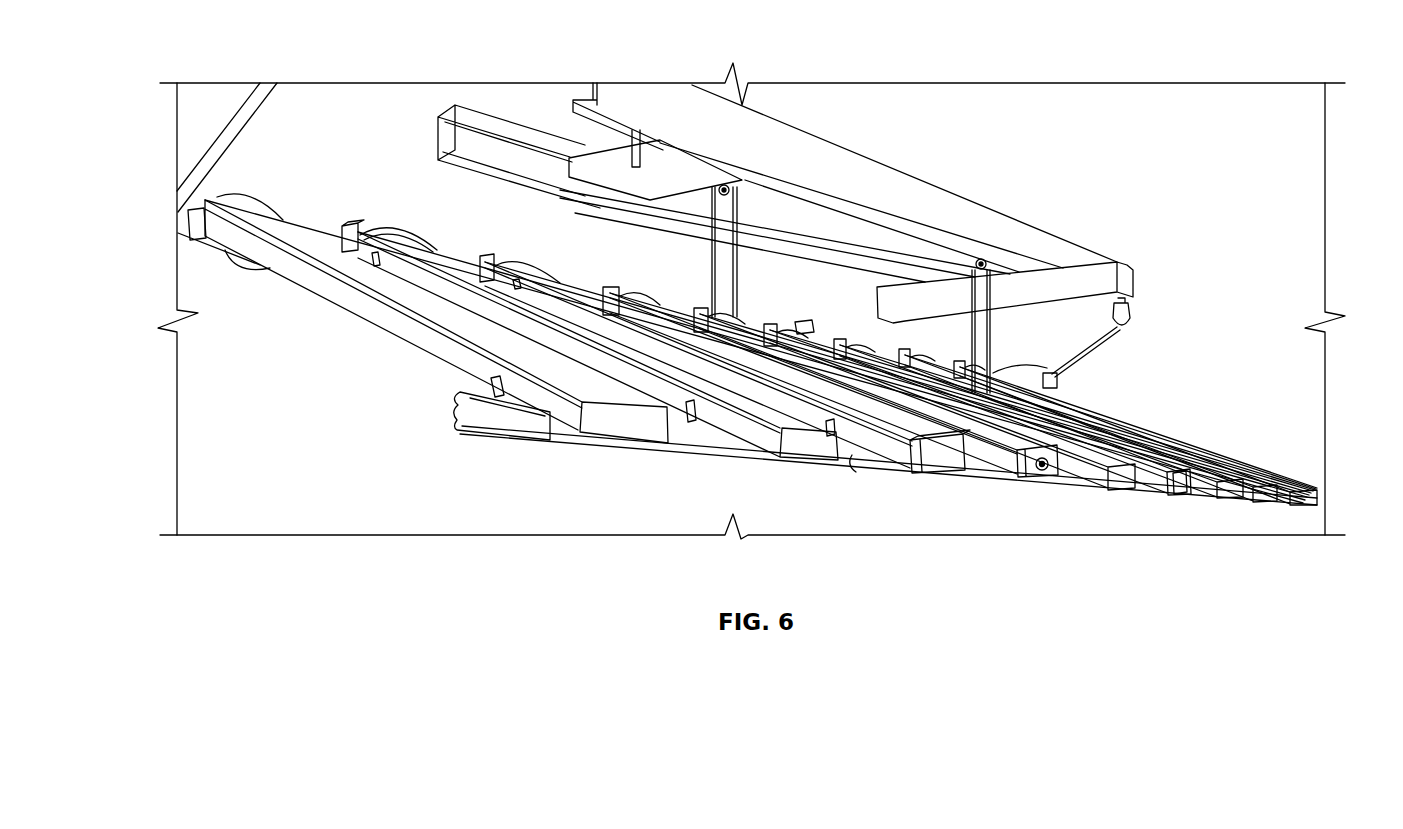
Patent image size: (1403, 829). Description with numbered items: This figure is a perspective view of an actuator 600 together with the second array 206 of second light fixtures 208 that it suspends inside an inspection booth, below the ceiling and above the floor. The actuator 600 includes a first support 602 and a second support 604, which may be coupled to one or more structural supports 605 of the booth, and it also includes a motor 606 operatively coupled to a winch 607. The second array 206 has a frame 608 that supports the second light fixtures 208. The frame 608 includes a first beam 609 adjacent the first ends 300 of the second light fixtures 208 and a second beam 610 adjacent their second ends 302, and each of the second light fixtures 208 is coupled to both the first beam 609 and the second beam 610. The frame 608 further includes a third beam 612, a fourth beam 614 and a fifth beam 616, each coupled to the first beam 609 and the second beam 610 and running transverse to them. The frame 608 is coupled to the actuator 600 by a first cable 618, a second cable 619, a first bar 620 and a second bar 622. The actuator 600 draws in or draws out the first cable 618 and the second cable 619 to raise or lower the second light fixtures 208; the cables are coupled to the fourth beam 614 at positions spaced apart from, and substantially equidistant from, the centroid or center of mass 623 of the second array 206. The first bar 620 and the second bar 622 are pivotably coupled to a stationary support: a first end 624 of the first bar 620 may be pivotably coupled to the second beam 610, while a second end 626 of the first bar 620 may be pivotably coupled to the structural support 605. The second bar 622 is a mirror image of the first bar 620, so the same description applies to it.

The second array 206 is at (746, 396).
The second light fixtures 208 is at (600, 422).
The first ends 300 is at (852, 467).
The second ends 302 is at (348, 224).
The actuator 600 is at (825, 213).
The first support 602 is at (965, 212).
The second support 604 is at (482, 140).
The structural support 605 is at (1077, 277).
The motor 606 is at (570, 160).
The winch 607 is at (677, 157).
The frame 608 is at (693, 427).
The first beam 609 is at (500, 418).
The second beam 610 is at (200, 247).
The third beam 612 is at (918, 478).
The fourth beam 614 is at (1055, 483).
The fifth beam 616 is at (1185, 480).
The first cable 618 is at (730, 263).
The second cable 619 is at (992, 343).
The first bar 620 is at (1103, 343).
The second bar 622 is at (248, 118).
The center of mass 623 is at (808, 331).
The first end 624 is at (1063, 375).
The second end 626 is at (1130, 330).